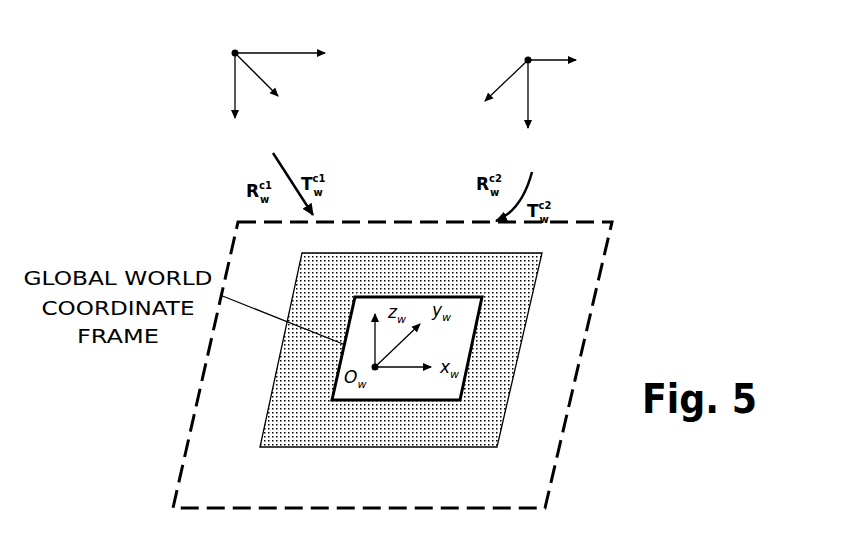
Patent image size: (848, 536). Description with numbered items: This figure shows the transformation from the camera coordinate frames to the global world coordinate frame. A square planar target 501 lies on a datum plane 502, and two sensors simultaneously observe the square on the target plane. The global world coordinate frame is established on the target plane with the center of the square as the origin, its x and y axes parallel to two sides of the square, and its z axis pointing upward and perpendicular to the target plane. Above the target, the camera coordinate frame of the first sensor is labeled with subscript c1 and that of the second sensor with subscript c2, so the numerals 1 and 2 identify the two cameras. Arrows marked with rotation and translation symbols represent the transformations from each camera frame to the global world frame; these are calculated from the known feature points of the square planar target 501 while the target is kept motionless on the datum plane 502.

The square planar target 501 is at (268, 425).
The datum plane 502 is at (182, 462).
The camera coordinate frame (camera 1) 1 is at (205, 88).
The camera coordinate frame (camera 2) 2 is at (613, 92).